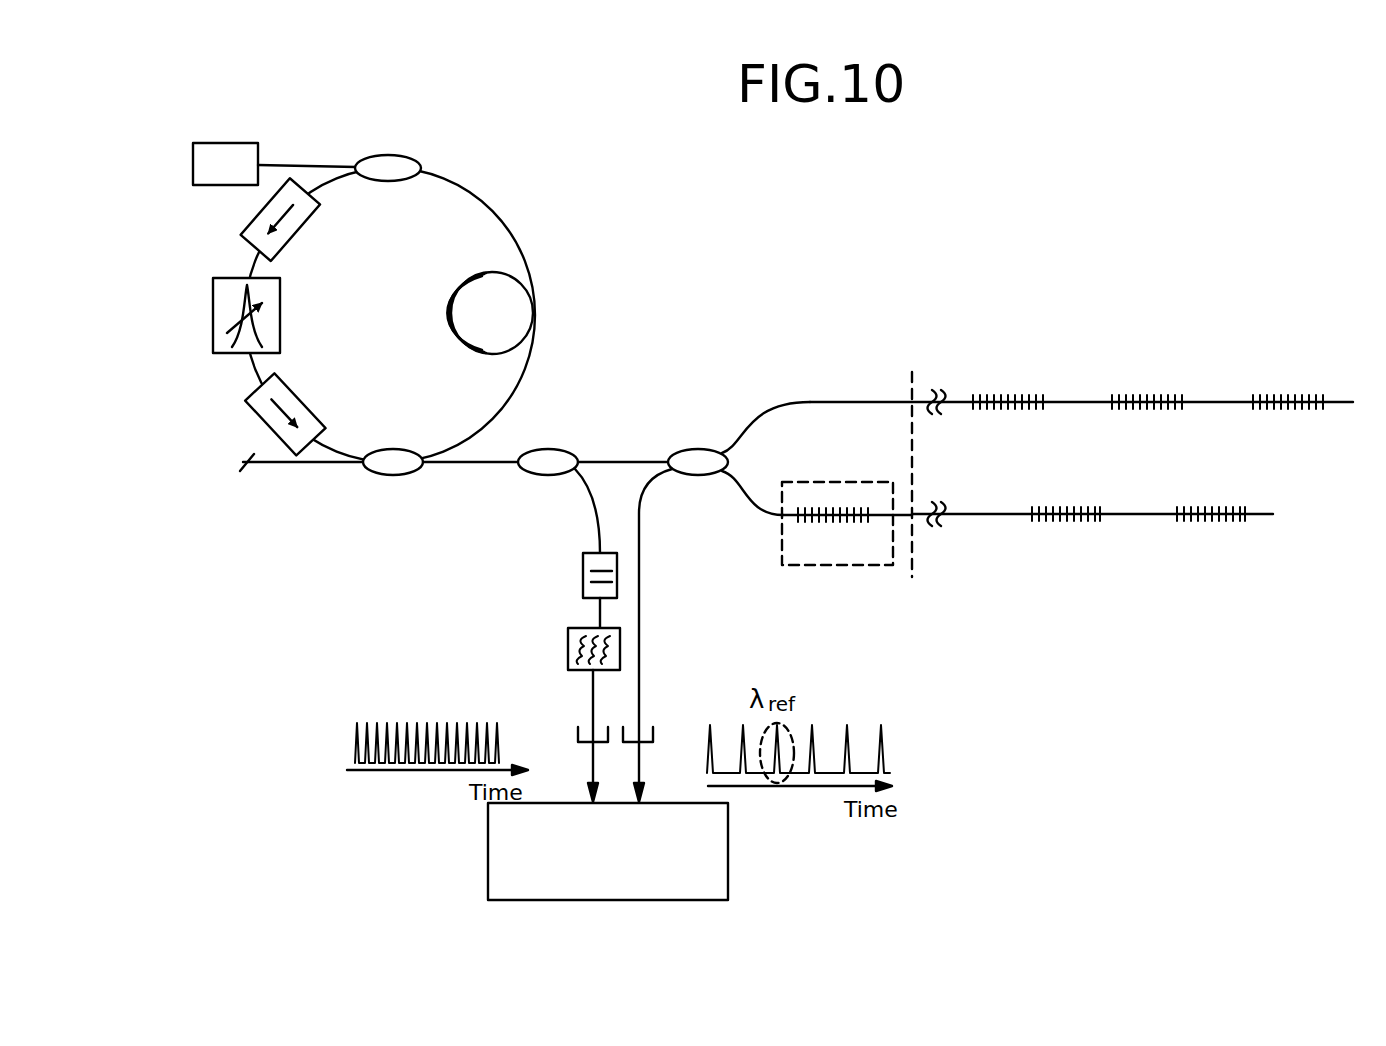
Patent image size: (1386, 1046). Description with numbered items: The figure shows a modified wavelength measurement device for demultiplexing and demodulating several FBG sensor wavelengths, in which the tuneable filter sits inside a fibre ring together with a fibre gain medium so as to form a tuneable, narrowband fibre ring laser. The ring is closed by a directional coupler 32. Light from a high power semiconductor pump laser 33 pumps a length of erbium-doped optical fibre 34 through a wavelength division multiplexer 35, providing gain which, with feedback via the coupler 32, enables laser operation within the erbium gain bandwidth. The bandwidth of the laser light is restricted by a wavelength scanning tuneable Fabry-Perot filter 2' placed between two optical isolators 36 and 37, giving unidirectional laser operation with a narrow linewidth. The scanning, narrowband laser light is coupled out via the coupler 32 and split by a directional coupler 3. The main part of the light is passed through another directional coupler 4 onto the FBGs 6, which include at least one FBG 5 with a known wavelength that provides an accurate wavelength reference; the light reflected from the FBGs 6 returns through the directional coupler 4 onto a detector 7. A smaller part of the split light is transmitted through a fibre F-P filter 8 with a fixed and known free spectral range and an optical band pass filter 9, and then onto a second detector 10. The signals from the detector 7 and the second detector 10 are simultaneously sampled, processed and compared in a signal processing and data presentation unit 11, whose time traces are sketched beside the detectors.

The high power semiconductor pump laser 33 is at (274, 149).
The wavelength division multiplexer 35 is at (388, 152).
The optical isolator 37 is at (266, 219).
The wavelength scanning tuneable Fabry-Perot filter 2' is at (233, 315).
The erbium-doped optical fibre 34 is at (465, 313).
The optical isolator 36 is at (270, 414).
The directional coupler 32 is at (393, 480).
The directional coupler 3 is at (548, 444).
The directional coupler 4 is at (698, 444).
The FBG with known wavelength 5 is at (847, 523).
The FBGs 6 is at (1081, 463).
The fibre F-P filter 8 is at (582, 575).
The optical band pass filter 9 is at (580, 649).
The second detector 10 is at (574, 759).
The detector 7 is at (652, 759).
The signal processing and data presentation unit 11 is at (608, 851).